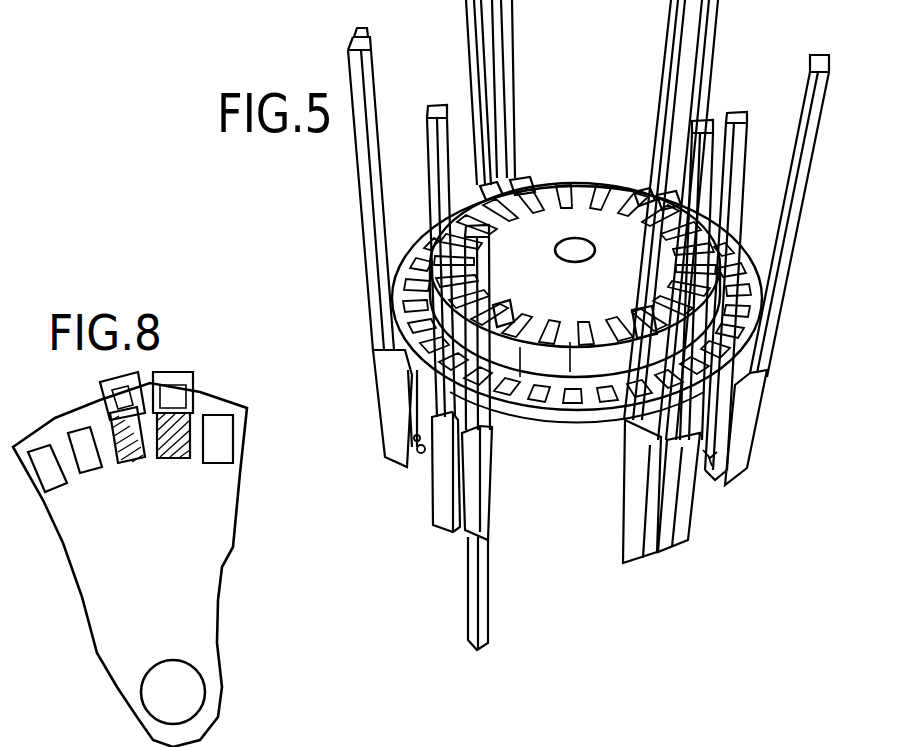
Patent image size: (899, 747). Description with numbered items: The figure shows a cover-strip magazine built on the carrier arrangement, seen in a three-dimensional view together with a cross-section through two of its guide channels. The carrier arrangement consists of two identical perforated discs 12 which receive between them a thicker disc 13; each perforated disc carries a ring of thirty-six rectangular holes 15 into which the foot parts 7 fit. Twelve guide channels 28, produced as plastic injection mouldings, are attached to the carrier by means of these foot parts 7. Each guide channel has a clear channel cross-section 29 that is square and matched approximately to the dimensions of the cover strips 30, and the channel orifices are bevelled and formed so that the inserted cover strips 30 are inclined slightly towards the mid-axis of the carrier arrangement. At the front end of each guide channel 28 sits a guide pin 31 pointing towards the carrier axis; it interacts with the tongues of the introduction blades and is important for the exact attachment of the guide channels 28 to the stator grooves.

In FIG. 5, the foot parts 7 is at (417, 312).
In FIG. 8, the perforated discs 12 is at (110, 626).
In FIG. 5, the perforated discs 12 is at (527, 408).
In FIG. 5, the thicker disc 13 is at (600, 367).
In FIG. 8, the rectangular holes 15 is at (58, 485).
In FIG. 5, the rectangular holes 15 is at (598, 190).
In FIG. 8, the guide channels 28 is at (140, 462).
In FIG. 5, the guide channels 28 is at (650, 532).
In FIG. 8, the clear channel cross-section 29 is at (180, 386).
In FIG. 8, the cover strips 30 is at (115, 372).
In FIG. 5, the cover strips 30 is at (503, 35).
In FIG. 5, the guide pin 31 is at (418, 465).